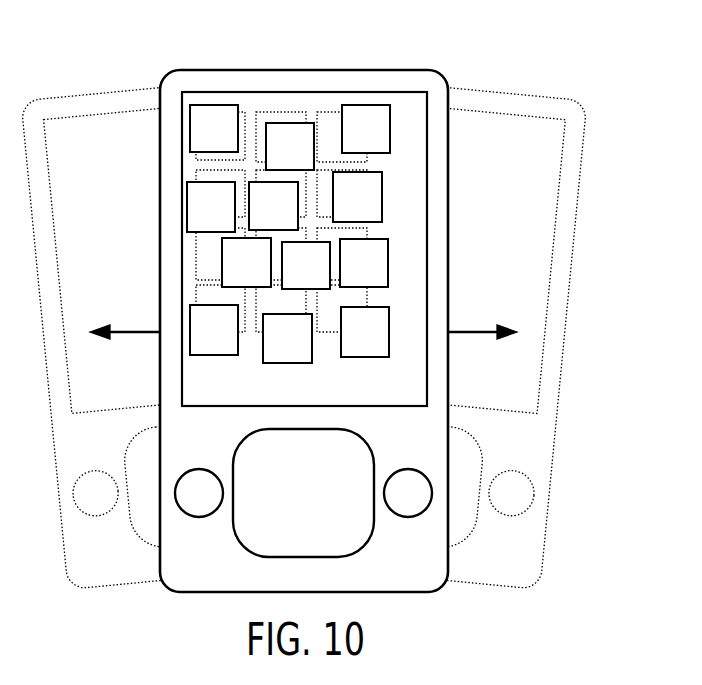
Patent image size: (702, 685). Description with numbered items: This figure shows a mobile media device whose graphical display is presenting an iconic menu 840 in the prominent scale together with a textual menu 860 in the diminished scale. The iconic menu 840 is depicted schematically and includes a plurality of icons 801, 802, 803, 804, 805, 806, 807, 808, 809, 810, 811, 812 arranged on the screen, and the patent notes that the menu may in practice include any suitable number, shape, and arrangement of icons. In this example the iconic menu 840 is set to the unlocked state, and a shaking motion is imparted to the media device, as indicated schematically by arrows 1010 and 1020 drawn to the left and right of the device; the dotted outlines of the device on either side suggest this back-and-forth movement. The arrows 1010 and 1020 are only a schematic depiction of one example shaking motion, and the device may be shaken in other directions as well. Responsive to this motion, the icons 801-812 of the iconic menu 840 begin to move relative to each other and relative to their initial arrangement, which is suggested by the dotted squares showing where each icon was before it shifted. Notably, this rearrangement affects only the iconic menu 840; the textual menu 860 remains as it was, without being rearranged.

The icon 801 is at (200, 141).
The icon 802 is at (276, 159).
The icon 803 is at (352, 142).
The icon 804 is at (197, 220).
The icon 805 is at (288, 218).
The icon 806 is at (372, 210).
The icon 807 is at (232, 275).
The icon 808 is at (292, 278).
The icon 809 is at (350, 276).
The icon 810 is at (200, 342).
The icon 811 is at (302, 351).
The icon 812 is at (351, 344).
The iconic menu 840 is at (288, 88).
The textual menu 860 is at (396, 88).
The arrow 1010 is at (125, 321).
The arrow 1020 is at (482, 321).